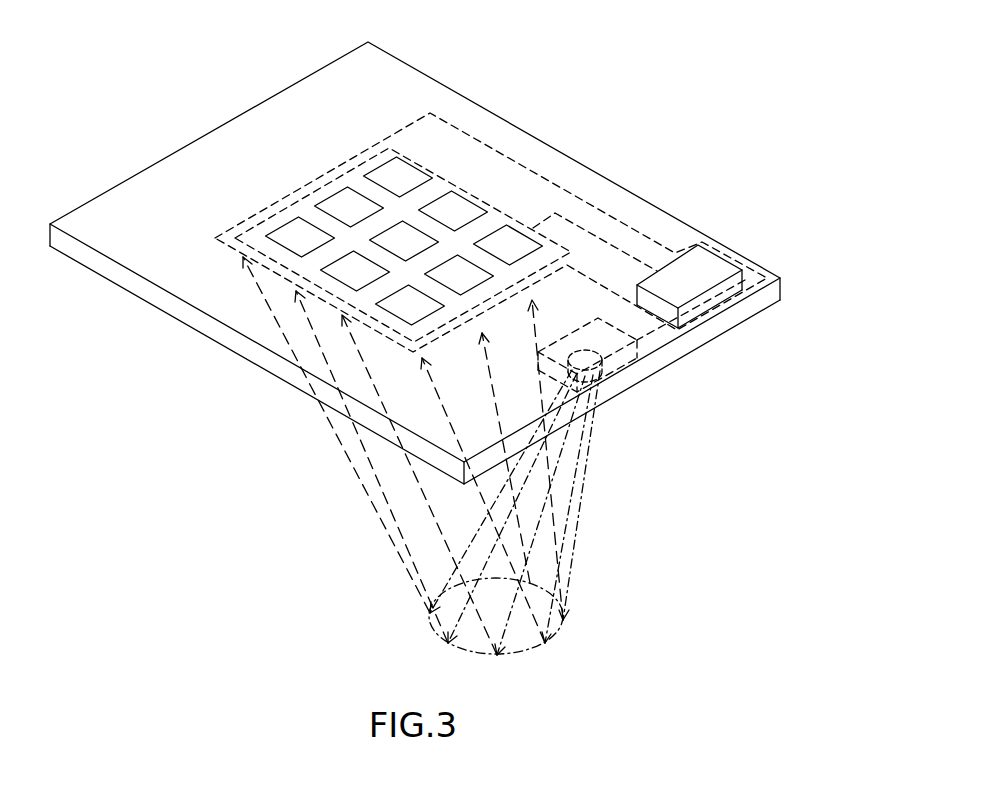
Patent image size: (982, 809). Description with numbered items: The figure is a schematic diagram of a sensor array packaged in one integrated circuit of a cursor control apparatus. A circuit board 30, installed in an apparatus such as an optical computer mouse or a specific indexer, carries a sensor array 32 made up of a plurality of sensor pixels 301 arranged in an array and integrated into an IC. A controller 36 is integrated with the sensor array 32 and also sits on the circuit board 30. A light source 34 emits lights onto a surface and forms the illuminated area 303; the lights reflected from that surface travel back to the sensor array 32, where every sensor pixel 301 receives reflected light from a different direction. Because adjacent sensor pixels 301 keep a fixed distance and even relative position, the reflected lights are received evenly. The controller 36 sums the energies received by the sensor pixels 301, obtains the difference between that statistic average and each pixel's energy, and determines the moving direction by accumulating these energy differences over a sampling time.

The circuit board 30 is at (290, 86).
The sensor array 32 is at (313, 193).
The sensor pixels 301 is at (460, 220).
The controller 36 is at (712, 267).
The light source 34 is at (620, 377).
The illuminated area 303 is at (563, 622).